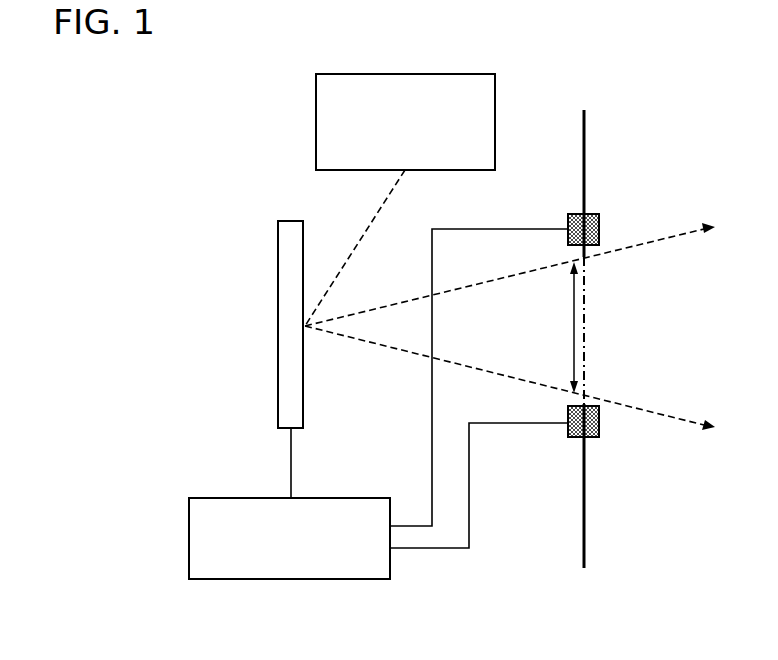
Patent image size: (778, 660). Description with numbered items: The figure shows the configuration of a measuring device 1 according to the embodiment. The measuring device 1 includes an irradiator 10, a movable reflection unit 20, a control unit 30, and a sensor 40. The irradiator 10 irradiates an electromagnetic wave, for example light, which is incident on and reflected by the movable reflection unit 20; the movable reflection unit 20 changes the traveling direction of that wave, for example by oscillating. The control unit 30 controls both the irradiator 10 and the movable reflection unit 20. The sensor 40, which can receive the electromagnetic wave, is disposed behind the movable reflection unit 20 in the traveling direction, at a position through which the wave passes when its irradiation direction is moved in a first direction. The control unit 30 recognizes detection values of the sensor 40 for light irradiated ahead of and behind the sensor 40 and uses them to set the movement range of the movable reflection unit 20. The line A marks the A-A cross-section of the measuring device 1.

The measuring device 1 is at (705, 67).
The irradiator 10 is at (316, 118).
The movable reflection unit 20 is at (278, 270).
The control unit 30 is at (331, 579).
The sensor 40 is at (599, 226).
The A-A cross-section line A is at (595, 161).